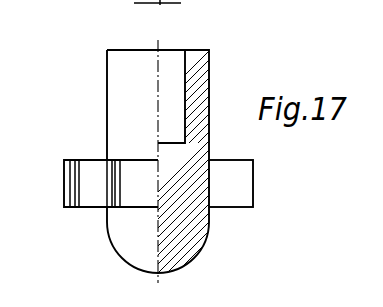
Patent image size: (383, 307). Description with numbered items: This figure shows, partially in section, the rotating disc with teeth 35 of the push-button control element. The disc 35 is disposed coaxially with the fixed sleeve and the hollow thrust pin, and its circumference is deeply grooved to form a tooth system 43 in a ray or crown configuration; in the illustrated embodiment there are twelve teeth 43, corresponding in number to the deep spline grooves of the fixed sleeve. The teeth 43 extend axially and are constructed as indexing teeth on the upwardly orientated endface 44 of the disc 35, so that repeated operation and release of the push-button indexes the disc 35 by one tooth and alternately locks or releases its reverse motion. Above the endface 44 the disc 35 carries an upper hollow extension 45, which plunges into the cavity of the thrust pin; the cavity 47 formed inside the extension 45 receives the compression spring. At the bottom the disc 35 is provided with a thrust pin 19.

The thrust pin 19 is at (128, 233).
The rotating disc with teeth 35 is at (197, 188).
The teeth 43 is at (233, 179).
The upwardly orientated endface 44 is at (82, 160).
The upper hollow extension 45 is at (208, 66).
The cavity 47 is at (167, 58).